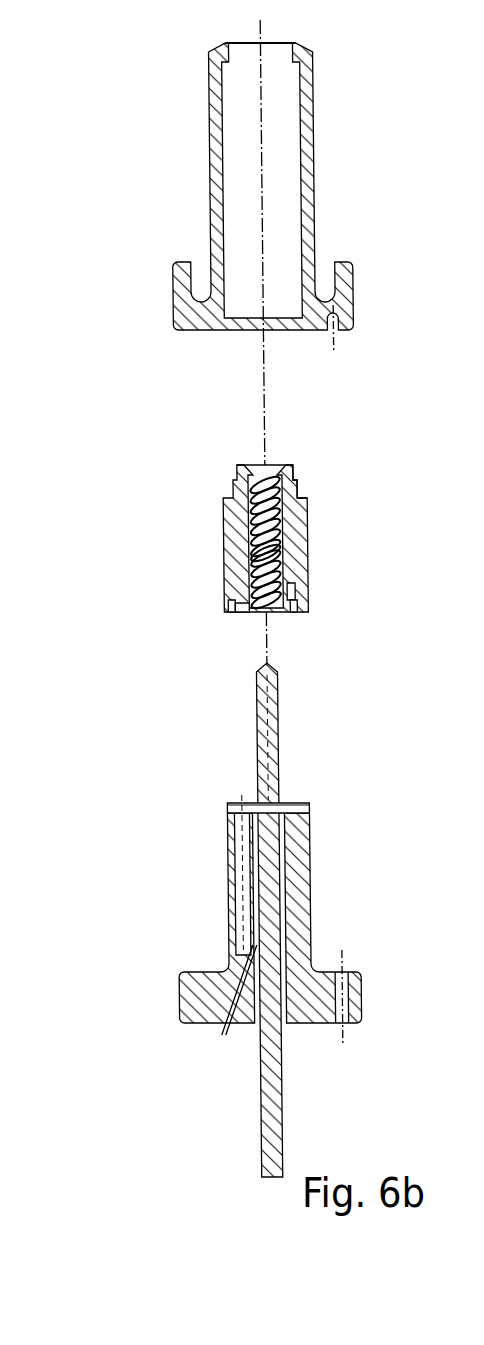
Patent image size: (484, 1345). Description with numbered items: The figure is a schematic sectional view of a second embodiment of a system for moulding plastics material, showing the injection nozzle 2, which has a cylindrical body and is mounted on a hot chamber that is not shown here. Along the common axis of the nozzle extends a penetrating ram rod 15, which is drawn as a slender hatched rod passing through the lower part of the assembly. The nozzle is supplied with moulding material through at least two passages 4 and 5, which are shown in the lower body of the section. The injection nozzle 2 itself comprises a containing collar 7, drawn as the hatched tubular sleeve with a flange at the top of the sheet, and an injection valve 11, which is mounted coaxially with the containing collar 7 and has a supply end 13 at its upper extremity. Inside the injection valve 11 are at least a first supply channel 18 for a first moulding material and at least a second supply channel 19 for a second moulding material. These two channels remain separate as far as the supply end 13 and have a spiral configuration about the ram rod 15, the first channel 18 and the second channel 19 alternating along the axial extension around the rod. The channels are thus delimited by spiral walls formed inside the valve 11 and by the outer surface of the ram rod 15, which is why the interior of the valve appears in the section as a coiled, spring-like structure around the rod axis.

The injection nozzle 2 is at (117, 275).
The containing collar 7 is at (313, 158).
The injection valve 11 is at (218, 538).
The supply end 13 is at (294, 472).
The first supply channel 18 is at (285, 566).
The second supply channel 19 is at (283, 557).
The penetrating ram rod 15 is at (278, 752).
The passage 4 is at (287, 1025).
The passage 5 is at (222, 1032).